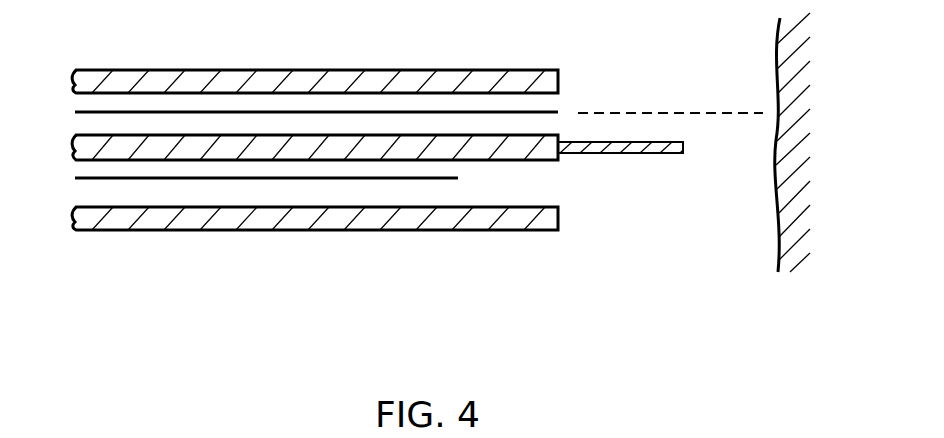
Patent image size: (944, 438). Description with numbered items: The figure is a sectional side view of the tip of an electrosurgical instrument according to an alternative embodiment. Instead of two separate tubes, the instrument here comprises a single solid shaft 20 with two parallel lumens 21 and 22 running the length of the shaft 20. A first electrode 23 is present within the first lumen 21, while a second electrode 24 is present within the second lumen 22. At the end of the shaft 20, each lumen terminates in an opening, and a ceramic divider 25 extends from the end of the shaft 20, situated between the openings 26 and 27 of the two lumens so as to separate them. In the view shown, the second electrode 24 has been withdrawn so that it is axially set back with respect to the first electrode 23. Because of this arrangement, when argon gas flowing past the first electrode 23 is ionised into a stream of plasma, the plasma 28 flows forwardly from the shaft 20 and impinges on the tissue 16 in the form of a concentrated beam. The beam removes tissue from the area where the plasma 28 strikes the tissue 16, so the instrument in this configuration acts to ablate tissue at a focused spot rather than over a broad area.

The tissue 16 is at (790, 235).
The shaft 20 is at (230, 78).
The first lumen 21 is at (407, 105).
The second lumen 22 is at (273, 198).
The first electrode 23 is at (468, 110).
The second electrode 24 is at (432, 180).
The ceramic divider 25 is at (665, 153).
The opening 26 is at (558, 100).
The opening 27 is at (556, 190).
The plasma 28 is at (660, 112).